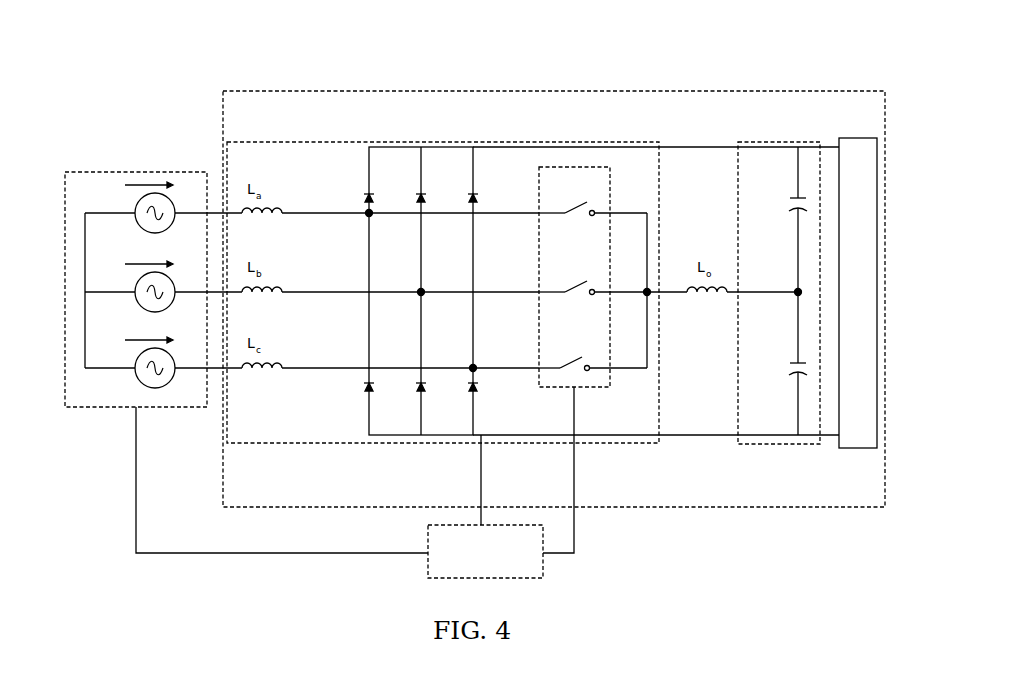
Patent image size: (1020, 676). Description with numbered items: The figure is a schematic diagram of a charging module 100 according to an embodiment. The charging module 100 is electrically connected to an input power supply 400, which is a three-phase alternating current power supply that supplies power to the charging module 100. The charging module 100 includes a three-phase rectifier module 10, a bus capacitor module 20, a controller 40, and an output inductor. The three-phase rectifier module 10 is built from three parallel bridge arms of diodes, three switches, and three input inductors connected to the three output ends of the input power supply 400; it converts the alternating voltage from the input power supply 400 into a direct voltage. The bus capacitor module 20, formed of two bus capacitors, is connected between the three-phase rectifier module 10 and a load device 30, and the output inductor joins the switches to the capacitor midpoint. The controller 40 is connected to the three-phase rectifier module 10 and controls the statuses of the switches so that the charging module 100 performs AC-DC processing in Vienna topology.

The charging module 100 is at (330, 91).
The input power supply 400 is at (110, 171).
The three-phase rectifier module 10 is at (638, 446).
The bus capacitor module 20 is at (770, 447).
The load device 30 is at (850, 450).
The controller 40 is at (427, 539).